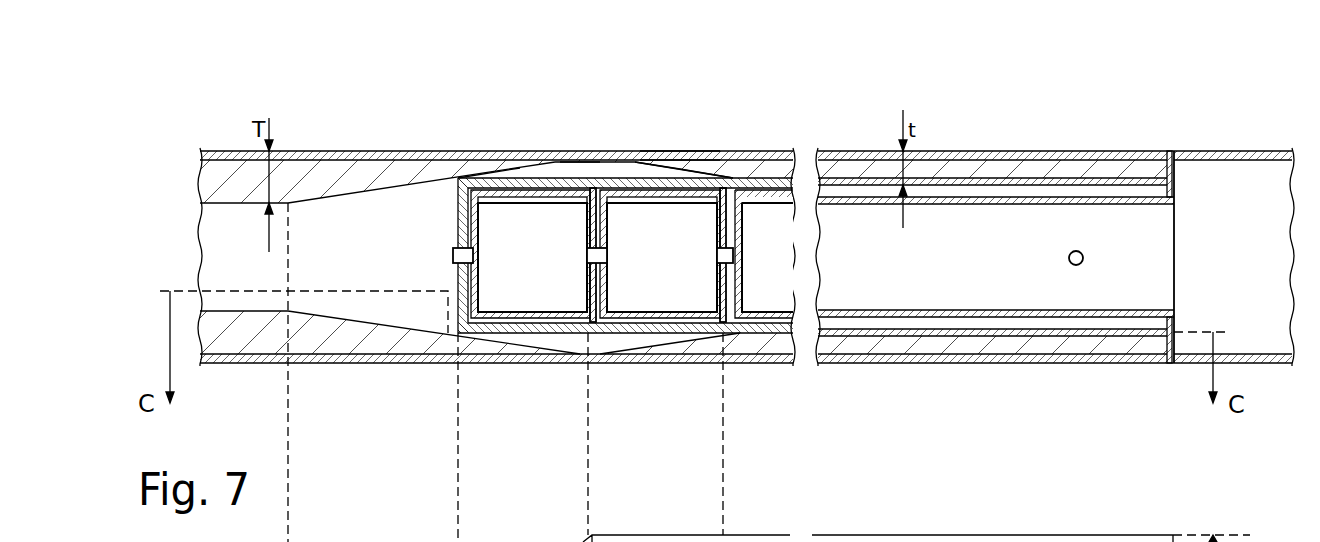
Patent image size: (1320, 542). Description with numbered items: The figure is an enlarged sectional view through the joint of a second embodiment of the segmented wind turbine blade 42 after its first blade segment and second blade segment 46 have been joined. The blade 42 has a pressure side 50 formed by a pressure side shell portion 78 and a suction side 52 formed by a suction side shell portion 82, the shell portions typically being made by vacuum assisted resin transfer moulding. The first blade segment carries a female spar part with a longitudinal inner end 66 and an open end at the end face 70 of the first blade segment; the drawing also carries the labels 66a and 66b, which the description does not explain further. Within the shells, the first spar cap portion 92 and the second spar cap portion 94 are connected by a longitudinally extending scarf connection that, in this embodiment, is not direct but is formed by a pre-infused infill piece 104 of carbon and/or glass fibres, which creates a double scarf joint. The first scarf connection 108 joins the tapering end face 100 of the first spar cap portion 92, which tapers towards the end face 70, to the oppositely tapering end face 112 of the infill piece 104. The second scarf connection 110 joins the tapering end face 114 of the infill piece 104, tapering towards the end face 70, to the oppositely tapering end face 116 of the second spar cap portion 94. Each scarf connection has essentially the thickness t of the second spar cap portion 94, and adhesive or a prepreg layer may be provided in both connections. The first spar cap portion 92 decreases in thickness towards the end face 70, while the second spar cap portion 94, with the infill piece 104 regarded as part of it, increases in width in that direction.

The segmented wind turbine blade 42 is at (845, 133).
The second blade segment 46 is at (1267, 136).
The pressure side 50 is at (978, 168).
The suction side 52 is at (1045, 360).
The longitudinal inner end 66 is at (578, 227).
The first end of insert 66a is at (457, 205).
The second end of insert 66b is at (717, 285).
The end face 70 is at (1172, 162).
The pressure side shell portion 78 is at (780, 157).
The suction side shell portion 82 is at (777, 360).
The first spar cap portion 92 is at (343, 177).
The second spar cap portion 94 is at (875, 343).
The tapering end face 100 is at (587, 223).
The infill piece 104 is at (578, 170).
The first scarf connection 108 is at (578, 172).
The second scarf connection 110 is at (702, 170).
The tapering end face 112 is at (512, 163).
The tapering end face 114 is at (682, 157).
The tapering end face 116 is at (650, 170).